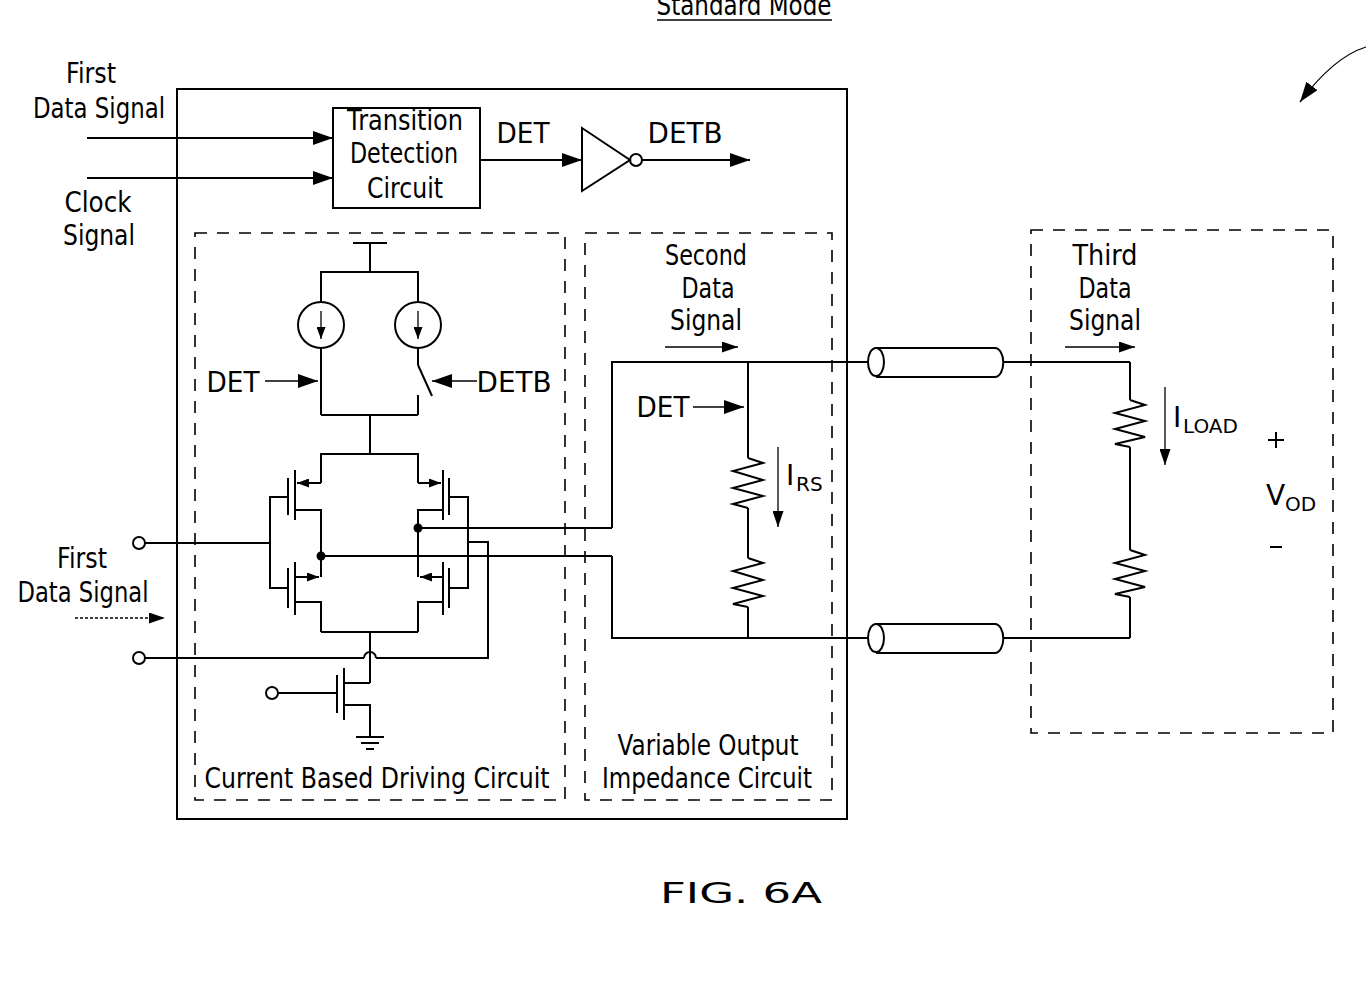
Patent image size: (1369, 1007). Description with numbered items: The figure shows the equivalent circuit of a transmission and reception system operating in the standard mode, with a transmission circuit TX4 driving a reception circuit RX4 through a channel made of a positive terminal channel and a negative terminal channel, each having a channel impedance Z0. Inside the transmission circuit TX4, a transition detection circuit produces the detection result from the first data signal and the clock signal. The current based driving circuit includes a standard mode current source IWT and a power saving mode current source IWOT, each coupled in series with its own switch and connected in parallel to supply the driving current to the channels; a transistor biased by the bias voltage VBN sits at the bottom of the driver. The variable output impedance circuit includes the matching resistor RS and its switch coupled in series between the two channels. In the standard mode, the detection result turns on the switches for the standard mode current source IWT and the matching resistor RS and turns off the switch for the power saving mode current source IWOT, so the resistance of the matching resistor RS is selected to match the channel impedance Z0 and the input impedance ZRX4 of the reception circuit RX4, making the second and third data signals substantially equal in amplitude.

The transmission circuit TX4 is at (478, 87).
The reception circuit RX4 is at (1186, 228).
The channel impedance Z0 is at (943, 622).
The matching resistor RS is at (729, 548).
The input impedance ZRX4 is at (1099, 500).
The standard mode current source IWT is at (306, 309).
The power saving mode current source IWOT is at (442, 309).
The bias voltage transistor VBN is at (304, 702).